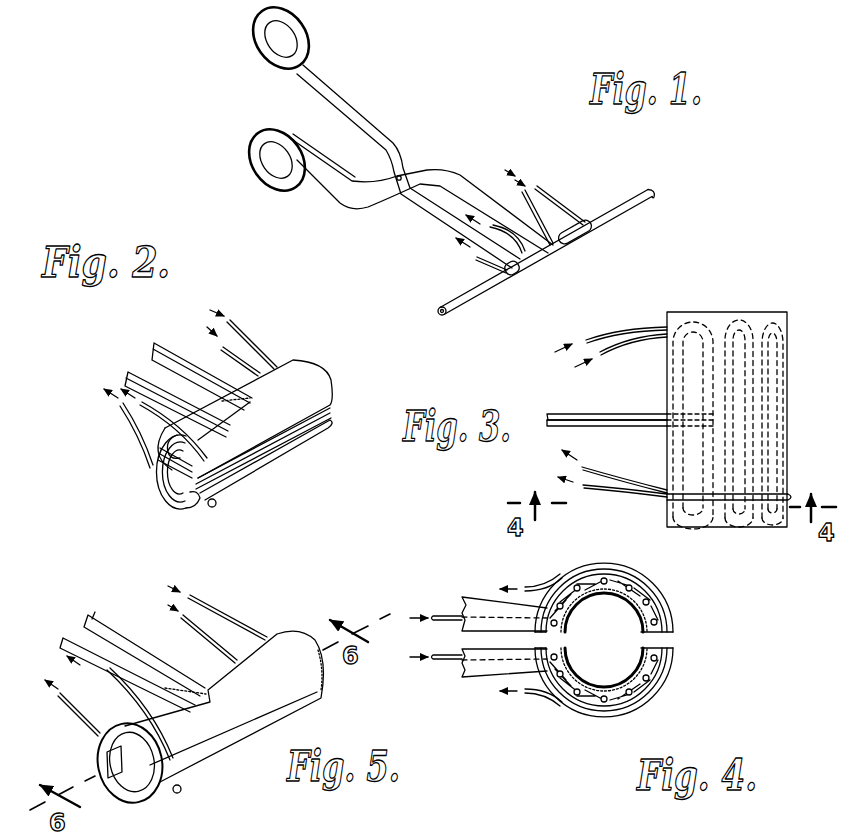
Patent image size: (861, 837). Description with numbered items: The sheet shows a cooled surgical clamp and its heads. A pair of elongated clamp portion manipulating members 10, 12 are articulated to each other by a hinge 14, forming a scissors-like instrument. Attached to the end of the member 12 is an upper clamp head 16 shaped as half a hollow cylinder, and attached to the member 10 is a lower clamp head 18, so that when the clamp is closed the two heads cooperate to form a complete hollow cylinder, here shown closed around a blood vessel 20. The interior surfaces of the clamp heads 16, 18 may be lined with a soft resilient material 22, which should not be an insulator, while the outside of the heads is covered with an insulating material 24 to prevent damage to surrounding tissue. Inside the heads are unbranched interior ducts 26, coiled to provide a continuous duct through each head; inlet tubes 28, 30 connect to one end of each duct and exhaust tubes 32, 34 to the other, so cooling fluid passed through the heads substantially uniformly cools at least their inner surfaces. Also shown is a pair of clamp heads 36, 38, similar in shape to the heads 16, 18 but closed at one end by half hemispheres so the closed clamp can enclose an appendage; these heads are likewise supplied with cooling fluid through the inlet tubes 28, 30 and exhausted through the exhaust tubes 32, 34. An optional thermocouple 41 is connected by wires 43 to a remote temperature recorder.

In FIG. 1, the clamp portion manipulating member 10 is at (333, 100).
In FIG. 2, the clamp portion manipulating member 10 is at (147, 373).
In FIG. 3, the clamp portion manipulating member 10 is at (555, 415).
In FIG. 4, the clamp portion manipulating member 10 is at (483, 673).
In FIG. 5, the clamp portion manipulating member 10 is at (83, 642).
In FIG. 1, the clamp portion manipulating member 12 is at (333, 176).
In FIG. 2, the clamp portion manipulating member 12 is at (170, 362).
In FIG. 3, the clamp portion manipulating member 12 is at (596, 418).
In FIG. 4, the clamp portion manipulating member 12 is at (480, 598).
In FIG. 5, the clamp portion manipulating member 12 is at (113, 627).
In FIG. 1, the hinge 14 is at (418, 175).
In FIG. 1, the upper clamp head 16 is at (580, 238).
In FIG. 2, the upper clamp head 16 is at (157, 480).
In FIG. 1, the lower clamp head 18 is at (520, 276).
In FIG. 2, the lower clamp head 18 is at (323, 417).
In FIG. 1, the blood vessel 20 is at (618, 206).
In FIG. 2, the soft resilient material 22 is at (153, 461).
In FIG. 4, the soft resilient material 22 is at (620, 678).
In FIG. 2, the insulating material 24 is at (307, 370).
In FIG. 3, the insulating material 24 is at (755, 392).
In FIG. 4, the insulating material 24 is at (678, 648).
In FIG. 3, the interior ducts 26 is at (738, 322).
In FIG. 4, the interior ducts 26 is at (630, 587).
In FIG. 1, the inlet tube 28 is at (563, 178).
In FIG. 2, the inlet tube 28 is at (262, 347).
In FIG. 3, the inlet tube 28 is at (611, 335).
In FIG. 4, the inlet tube 28 is at (437, 613).
In FIG. 5, the inlet tube 28 is at (233, 615).
In FIG. 1, the inlet tube 30 is at (530, 203).
In FIG. 2, the inlet tube 30 is at (212, 345).
In FIG. 3, the inlet tube 30 is at (616, 349).
In FIG. 4, the inlet tube 30 is at (443, 665).
In FIG. 5, the inlet tube 30 is at (200, 634).
In FIG. 1, the exhaust tube 32 is at (536, 248).
In FIG. 2, the exhaust tube 32 is at (197, 441).
In FIG. 3, the exhaust tube 32 is at (633, 495).
In FIG. 4, the exhaust tube 32 is at (563, 575).
In FIG. 5, the exhaust tube 32 is at (165, 735).
In FIG. 1, the exhaust tube 34 is at (477, 267).
In FIG. 2, the exhaust tube 34 is at (130, 428).
In FIG. 3, the exhaust tube 34 is at (630, 468).
In FIG. 4, the exhaust tube 34 is at (560, 705).
In FIG. 5, the exhaust tube 34 is at (100, 708).
In FIG. 5, the clamp head 36 is at (280, 640).
In FIG. 5, the clamp head 38 is at (250, 737).
In FIG. 5, the thermocouple 41 is at (110, 790).
In FIG. 5, the wires 43 is at (75, 757).